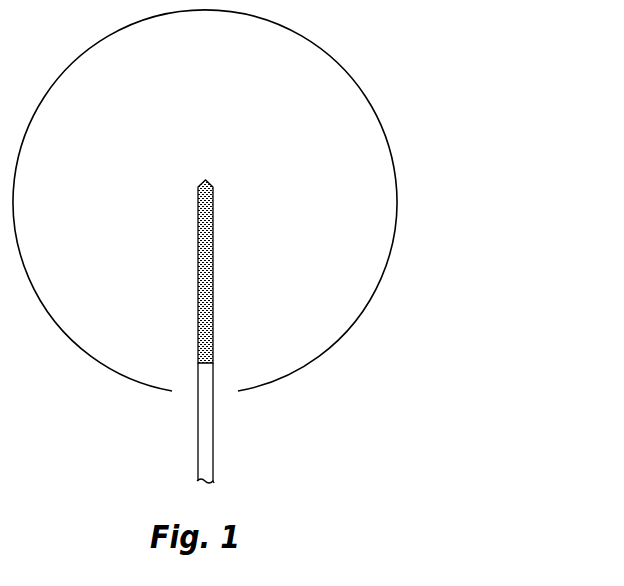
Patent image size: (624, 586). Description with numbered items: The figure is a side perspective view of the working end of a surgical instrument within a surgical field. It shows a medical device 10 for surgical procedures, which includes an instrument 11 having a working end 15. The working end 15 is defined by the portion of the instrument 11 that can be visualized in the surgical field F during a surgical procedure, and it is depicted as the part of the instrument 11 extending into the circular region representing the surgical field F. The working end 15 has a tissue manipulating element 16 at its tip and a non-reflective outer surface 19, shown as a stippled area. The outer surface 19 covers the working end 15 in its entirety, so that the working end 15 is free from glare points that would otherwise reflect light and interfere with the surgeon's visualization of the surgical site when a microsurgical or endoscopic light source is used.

The device 10 is at (408, 303).
The instrument 11 is at (213, 440).
The working end 15 is at (192, 179).
The tissue manipulating element 16 is at (213, 212).
The non-reflective outer surface 19 is at (213, 315).
The surgical field F is at (265, 107).